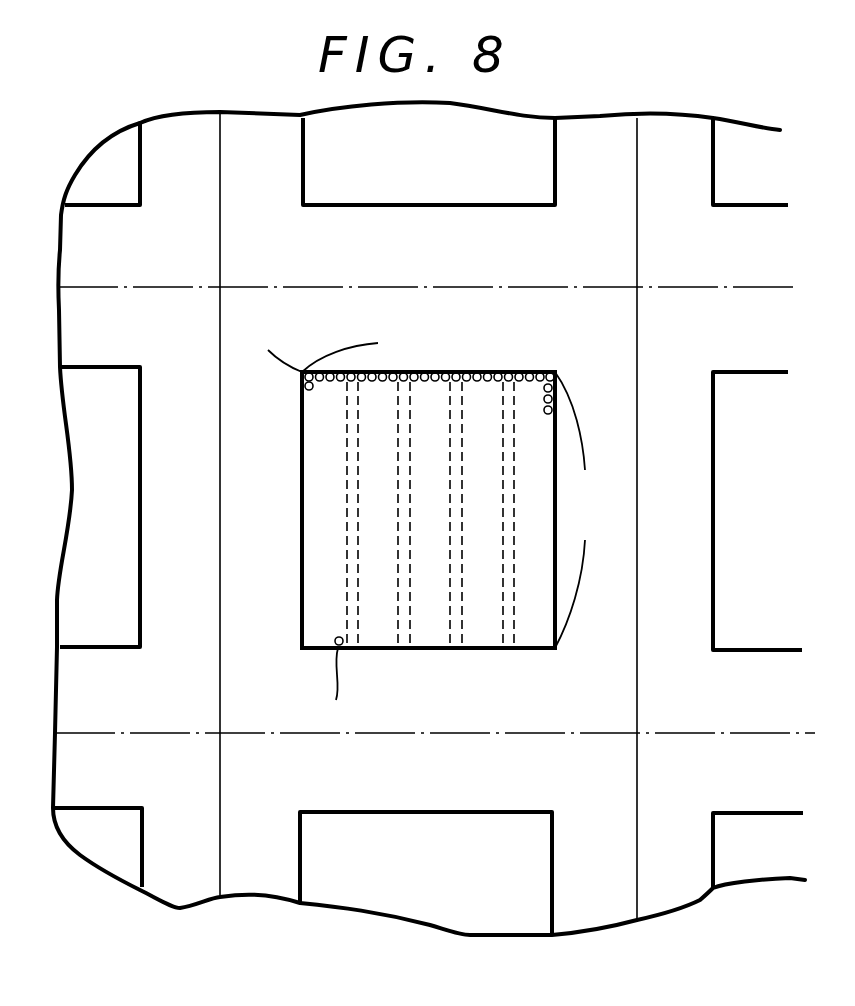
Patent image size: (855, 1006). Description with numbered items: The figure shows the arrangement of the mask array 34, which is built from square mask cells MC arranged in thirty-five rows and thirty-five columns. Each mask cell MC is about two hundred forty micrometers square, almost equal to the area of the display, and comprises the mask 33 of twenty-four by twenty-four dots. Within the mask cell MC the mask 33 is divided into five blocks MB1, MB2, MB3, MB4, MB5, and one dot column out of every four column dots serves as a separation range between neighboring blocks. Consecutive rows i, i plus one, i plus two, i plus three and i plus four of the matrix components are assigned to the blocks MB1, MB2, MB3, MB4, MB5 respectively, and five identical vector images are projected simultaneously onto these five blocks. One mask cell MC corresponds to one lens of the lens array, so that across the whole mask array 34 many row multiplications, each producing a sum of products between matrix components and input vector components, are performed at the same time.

The mask 33 is at (254, 620).
The mask array 34 is at (600, 936).
The mask cell MC is at (372, 205).
The first block of the mask cell MB1 is at (310, 628).
The second block of the mask cell MB2 is at (372, 635).
The third block of the mask cell MB3 is at (433, 635).
The fourth block of the mask cell MB4 is at (482, 630).
The fifth block of the mask cell MB5 is at (535, 635).